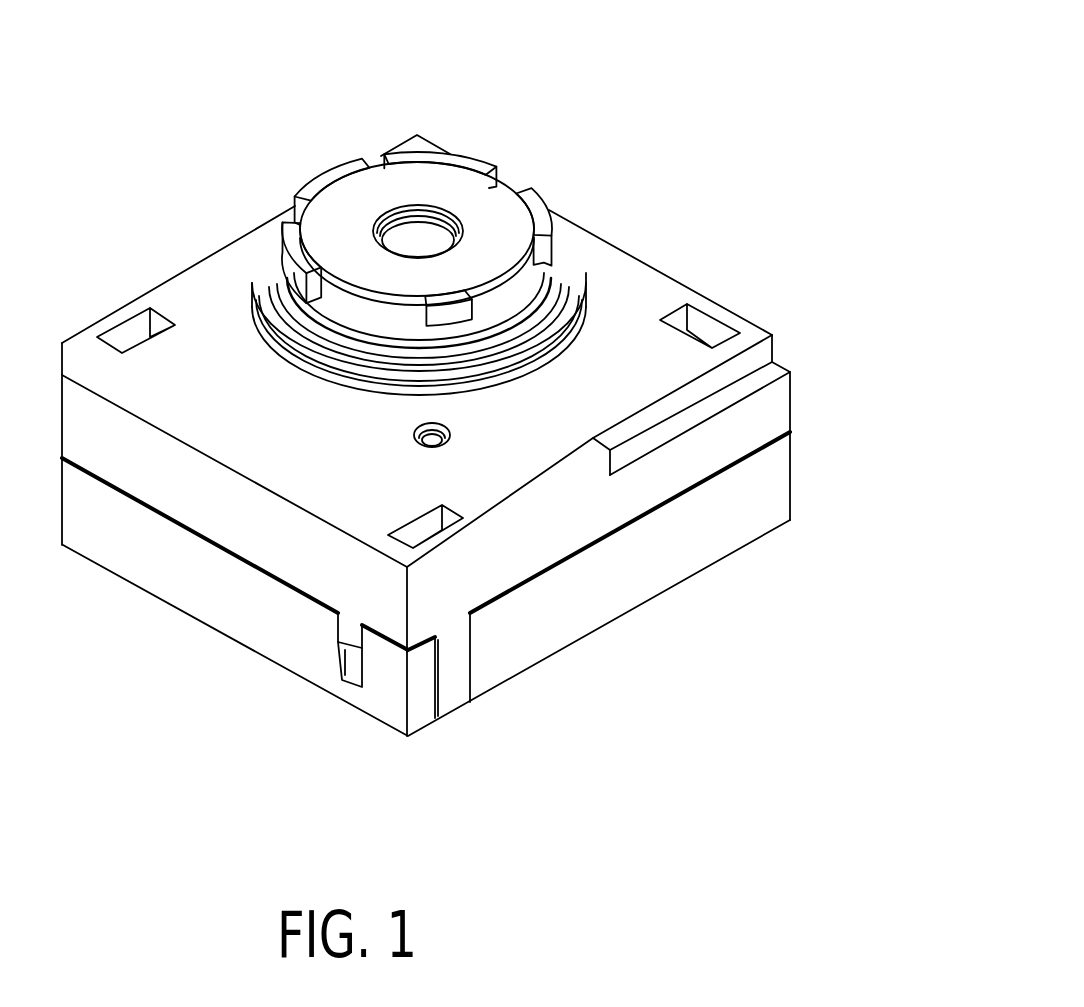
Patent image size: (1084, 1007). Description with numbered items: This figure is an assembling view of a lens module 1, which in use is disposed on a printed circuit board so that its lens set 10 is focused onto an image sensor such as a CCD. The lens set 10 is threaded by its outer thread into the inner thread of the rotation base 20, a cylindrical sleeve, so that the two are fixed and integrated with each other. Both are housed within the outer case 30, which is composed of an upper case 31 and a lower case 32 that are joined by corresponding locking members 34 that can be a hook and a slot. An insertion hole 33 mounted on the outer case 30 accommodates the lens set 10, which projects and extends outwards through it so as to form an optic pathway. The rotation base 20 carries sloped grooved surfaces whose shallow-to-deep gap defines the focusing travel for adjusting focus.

The lens module 1 is at (524, 135).
The lens set 10 is at (433, 176).
The rotation base 20 is at (574, 252).
The outer case 30 is at (804, 455).
The upper case 31 is at (780, 398).
The lower case 32 is at (770, 492).
The insertion hole 33 is at (497, 378).
The locking member 34 is at (450, 690).